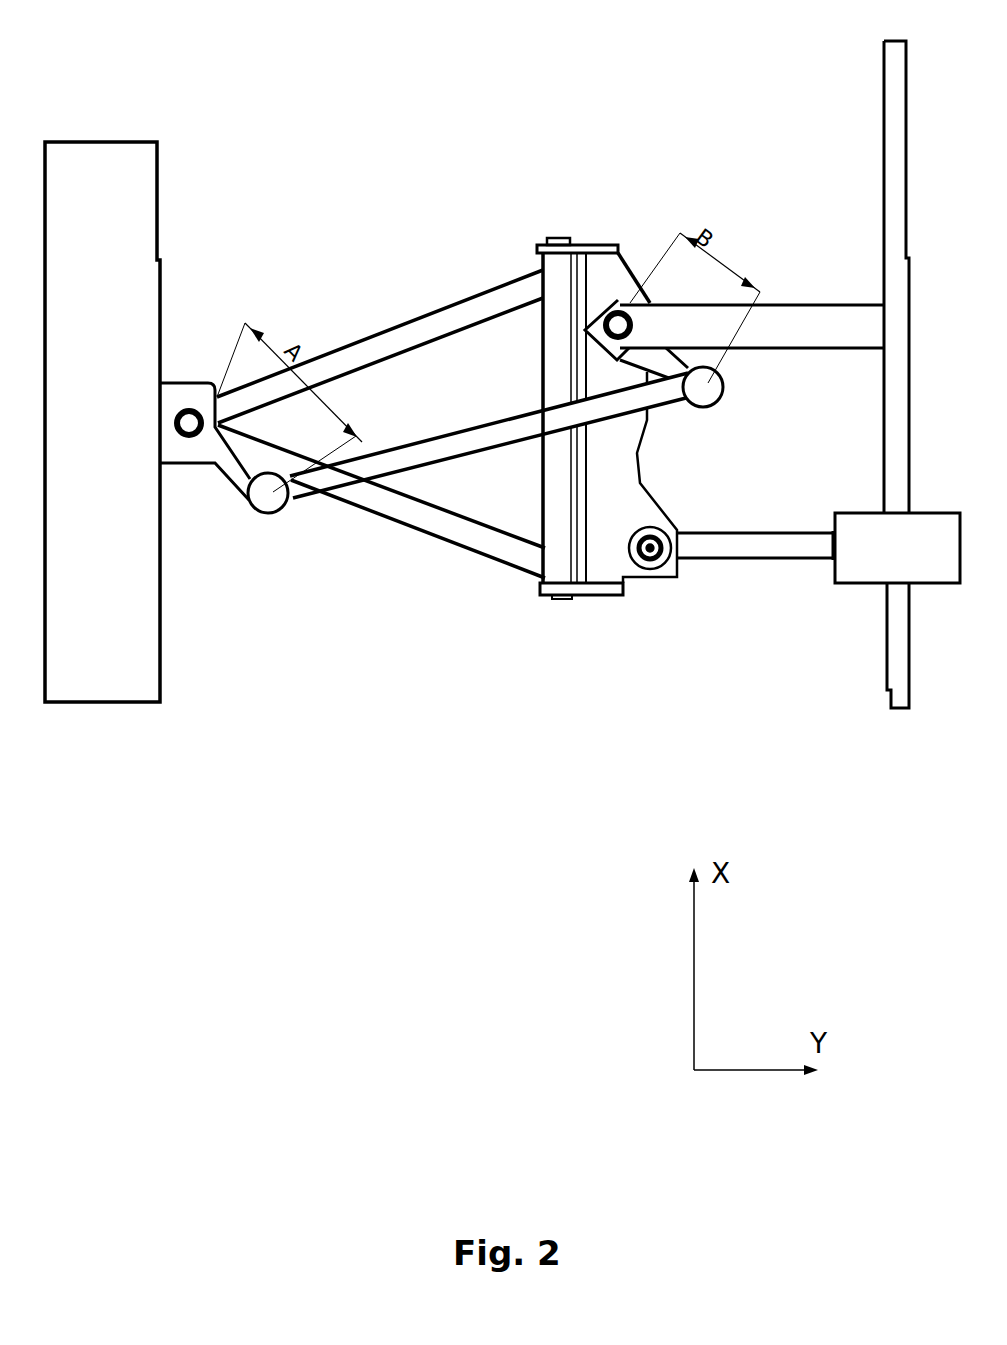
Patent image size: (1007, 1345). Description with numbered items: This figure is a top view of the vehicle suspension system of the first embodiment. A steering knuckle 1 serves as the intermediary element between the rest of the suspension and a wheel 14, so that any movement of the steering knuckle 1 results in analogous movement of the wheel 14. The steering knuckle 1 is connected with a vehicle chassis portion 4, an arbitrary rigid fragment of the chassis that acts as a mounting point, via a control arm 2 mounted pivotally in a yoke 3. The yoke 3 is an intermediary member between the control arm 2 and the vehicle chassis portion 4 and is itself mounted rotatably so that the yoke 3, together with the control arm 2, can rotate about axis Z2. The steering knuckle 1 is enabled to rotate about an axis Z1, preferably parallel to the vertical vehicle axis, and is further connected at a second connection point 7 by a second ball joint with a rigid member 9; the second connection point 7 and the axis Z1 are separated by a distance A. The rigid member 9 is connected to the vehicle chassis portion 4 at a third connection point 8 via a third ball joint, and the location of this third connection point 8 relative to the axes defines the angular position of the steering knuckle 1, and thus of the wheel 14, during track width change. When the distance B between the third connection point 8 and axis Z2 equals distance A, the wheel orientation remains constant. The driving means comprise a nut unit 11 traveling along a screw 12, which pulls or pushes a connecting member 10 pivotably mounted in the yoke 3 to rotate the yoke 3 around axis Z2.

The steering knuckle 1 is at (177, 458).
The control arm 2 is at (486, 300).
The yoke 3 is at (612, 267).
The vehicle chassis portion 4 is at (680, 320).
The second connection point 7 is at (272, 497).
The third connection point 8 is at (708, 385).
The rigid member 9 is at (423, 458).
The connecting member 10 is at (738, 547).
The nut unit 11 is at (873, 553).
The screw 12 is at (898, 102).
The wheel 14 is at (75, 190).
The axis Z1 is at (190, 410).
The axis Z2 is at (618, 312).